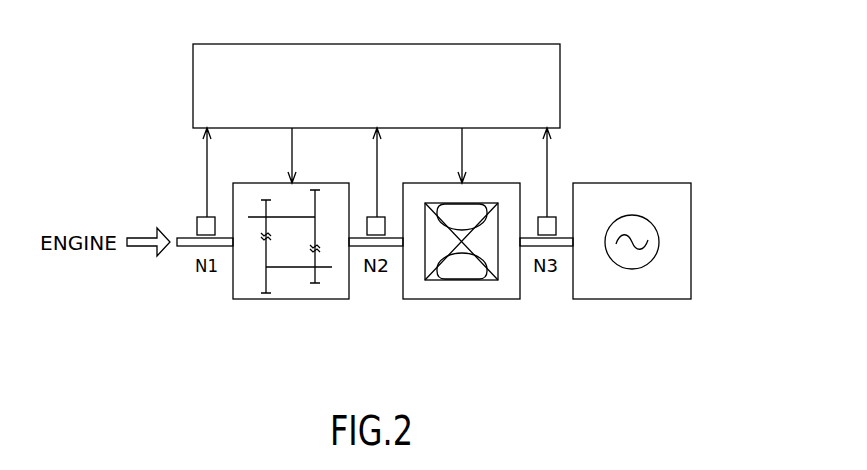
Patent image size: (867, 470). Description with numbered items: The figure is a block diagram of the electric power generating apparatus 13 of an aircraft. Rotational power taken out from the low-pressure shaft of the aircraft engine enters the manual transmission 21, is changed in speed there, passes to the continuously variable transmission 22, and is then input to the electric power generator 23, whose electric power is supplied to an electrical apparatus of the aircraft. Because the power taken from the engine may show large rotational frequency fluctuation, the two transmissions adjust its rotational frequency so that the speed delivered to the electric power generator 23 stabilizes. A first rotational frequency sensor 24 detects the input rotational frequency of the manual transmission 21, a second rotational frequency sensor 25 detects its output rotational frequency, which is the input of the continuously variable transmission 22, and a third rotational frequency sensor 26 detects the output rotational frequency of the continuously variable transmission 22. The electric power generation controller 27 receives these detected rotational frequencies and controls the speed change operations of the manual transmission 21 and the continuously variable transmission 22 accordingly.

The electric power generating apparatus 13 is at (650, 101).
The electric power generation controller 27 is at (193, 80).
The manual transmission 21 is at (295, 300).
The continuously variable transmission 22 is at (462, 300).
The electric power generator 23 is at (631, 300).
The first rotational frequency sensor 24 is at (214, 234).
The second rotational frequency sensor 25 is at (384, 234).
The third rotational frequency sensor 26 is at (556, 234).